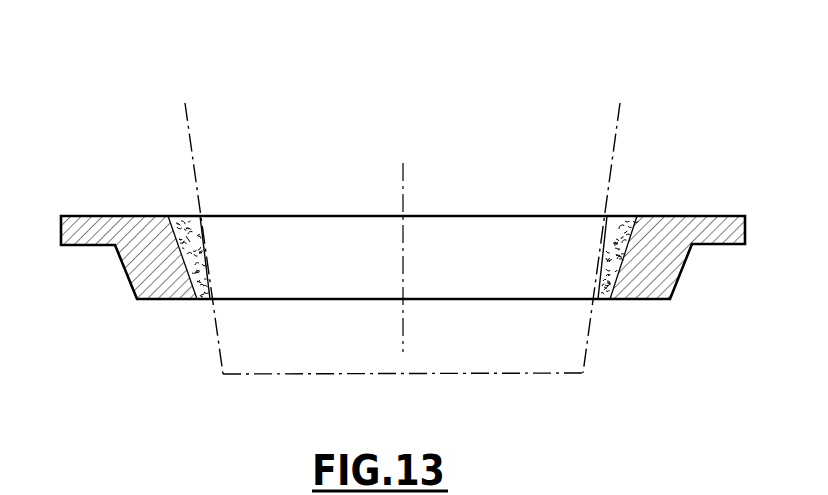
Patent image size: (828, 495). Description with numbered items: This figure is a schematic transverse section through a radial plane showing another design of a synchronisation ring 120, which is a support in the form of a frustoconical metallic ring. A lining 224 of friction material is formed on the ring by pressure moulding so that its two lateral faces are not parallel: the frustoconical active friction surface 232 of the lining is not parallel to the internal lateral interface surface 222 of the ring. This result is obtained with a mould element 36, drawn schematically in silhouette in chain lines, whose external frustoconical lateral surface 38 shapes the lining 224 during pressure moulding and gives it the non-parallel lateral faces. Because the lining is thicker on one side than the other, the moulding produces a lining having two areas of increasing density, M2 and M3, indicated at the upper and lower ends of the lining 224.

The synchronisation ring 120 is at (638, 305).
The lining 224 is at (182, 208).
The internal lateral interface surface 222 is at (613, 240).
The frustoconical active friction surface 232 is at (207, 263).
The mould element 36 is at (202, 175).
The external frustoconical lateral surface 38 is at (217, 348).
The area of increasing density M2 is at (190, 239).
The area of increasing density M3 is at (205, 300).